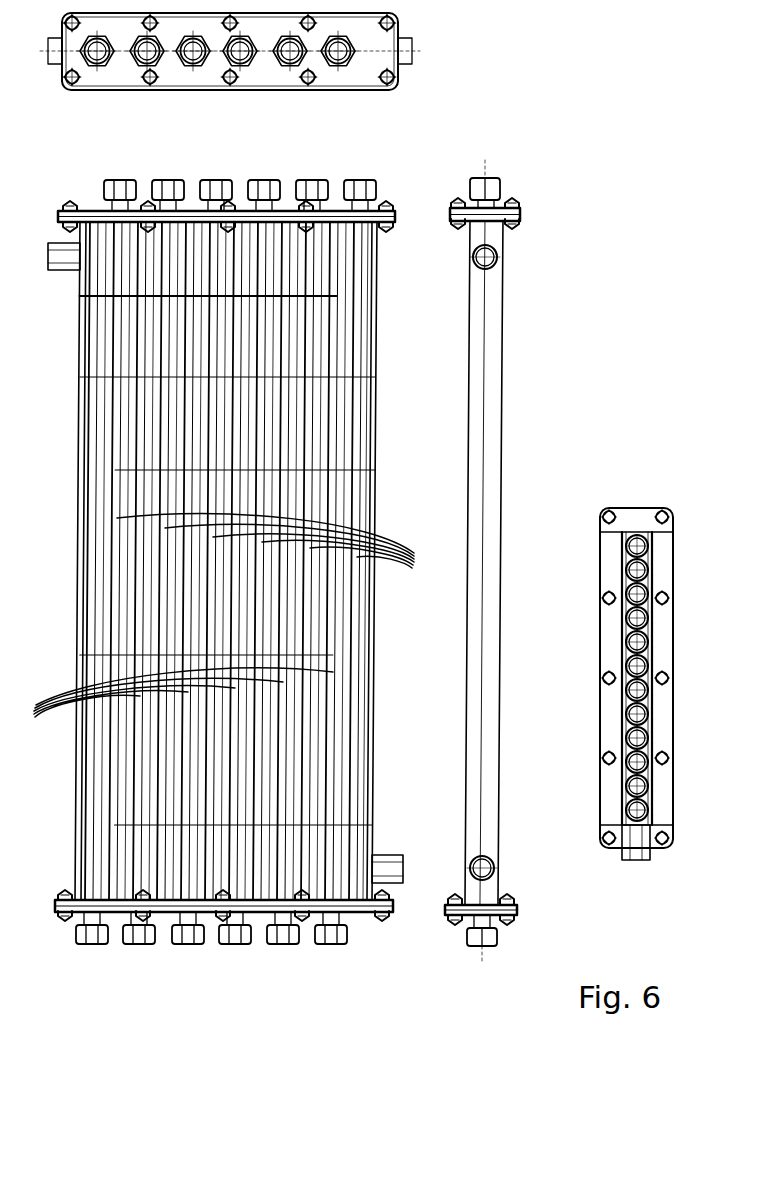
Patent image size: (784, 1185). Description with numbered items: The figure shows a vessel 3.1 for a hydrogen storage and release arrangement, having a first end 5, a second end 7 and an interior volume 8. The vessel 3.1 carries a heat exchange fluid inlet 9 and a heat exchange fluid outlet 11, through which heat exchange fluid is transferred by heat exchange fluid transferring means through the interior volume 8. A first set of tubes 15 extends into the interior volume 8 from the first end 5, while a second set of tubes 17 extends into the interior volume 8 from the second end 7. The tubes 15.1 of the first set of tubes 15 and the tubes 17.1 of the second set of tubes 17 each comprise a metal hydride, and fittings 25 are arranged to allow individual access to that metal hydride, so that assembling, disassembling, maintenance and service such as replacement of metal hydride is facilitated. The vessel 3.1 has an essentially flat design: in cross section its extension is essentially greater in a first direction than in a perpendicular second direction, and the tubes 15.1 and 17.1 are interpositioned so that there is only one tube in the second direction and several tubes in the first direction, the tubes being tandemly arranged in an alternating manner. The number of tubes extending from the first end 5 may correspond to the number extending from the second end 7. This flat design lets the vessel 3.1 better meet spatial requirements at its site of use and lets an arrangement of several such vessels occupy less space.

The vessel 3.1 is at (114, 150).
The first end 5 is at (360, 913).
The second end 7 is at (375, 211).
The interior volume 8 is at (345, 321).
The heat exchange fluid inlet 9 is at (403, 868).
The heat exchange fluid outlet 11 is at (47, 258).
The first set of tubes 15 is at (42, 758).
The tubes of the first set of tubes 15.1 is at (172, 706).
The second set of tubes 17 is at (418, 605).
The tubes of the second set of tubes 17.1 is at (284, 555).
The fittings 25 is at (358, 181).